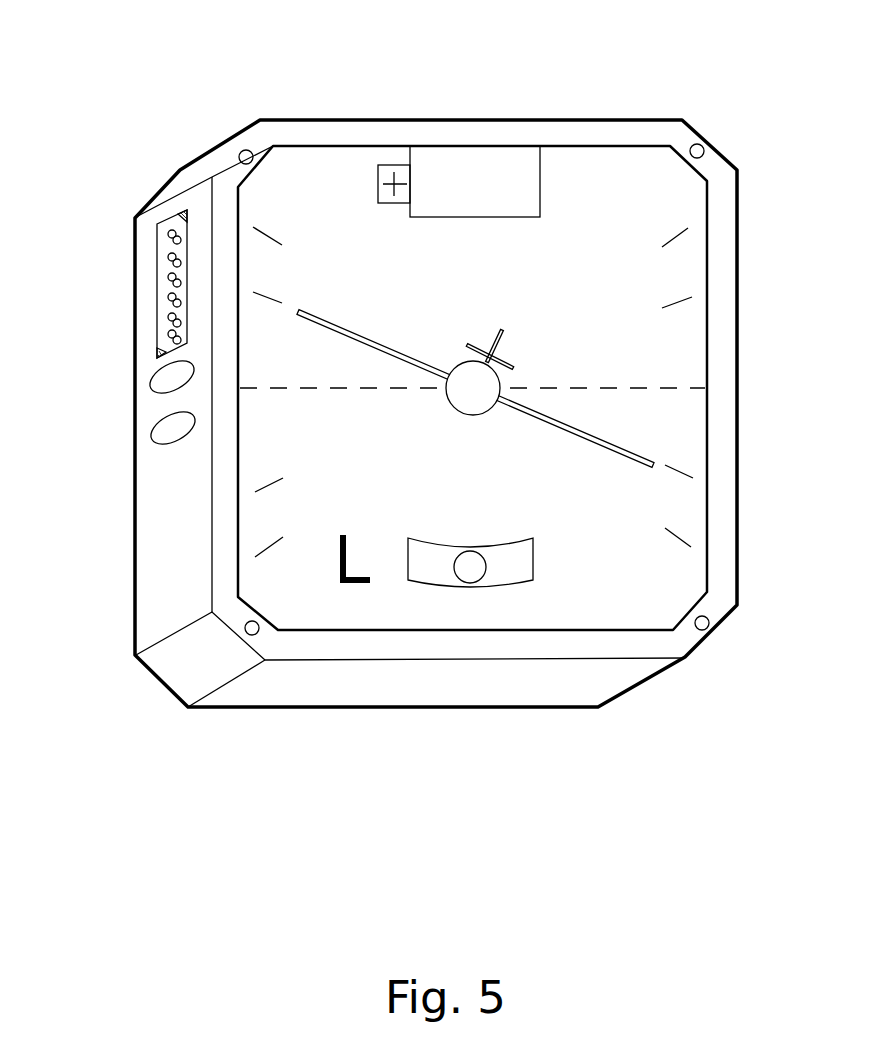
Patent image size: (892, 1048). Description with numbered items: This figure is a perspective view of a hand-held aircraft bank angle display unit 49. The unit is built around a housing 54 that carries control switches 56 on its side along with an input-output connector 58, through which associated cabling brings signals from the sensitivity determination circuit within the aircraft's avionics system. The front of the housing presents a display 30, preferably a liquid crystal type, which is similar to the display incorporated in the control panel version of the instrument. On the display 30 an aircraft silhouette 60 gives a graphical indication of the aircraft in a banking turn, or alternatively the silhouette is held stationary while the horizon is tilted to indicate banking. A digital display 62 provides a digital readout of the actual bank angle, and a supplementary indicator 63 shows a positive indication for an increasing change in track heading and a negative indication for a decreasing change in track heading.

The hand-held aircraft bank angle display unit 49 is at (124, 163).
The bank angle display 30 is at (290, 610).
The housing 54 is at (533, 678).
The control switches 56 is at (170, 373).
The input-output connector 58 is at (168, 280).
The aircraft silhouette 60 is at (418, 360).
The digital display 62 is at (493, 160).
The supplementary indicator 63 is at (393, 167).